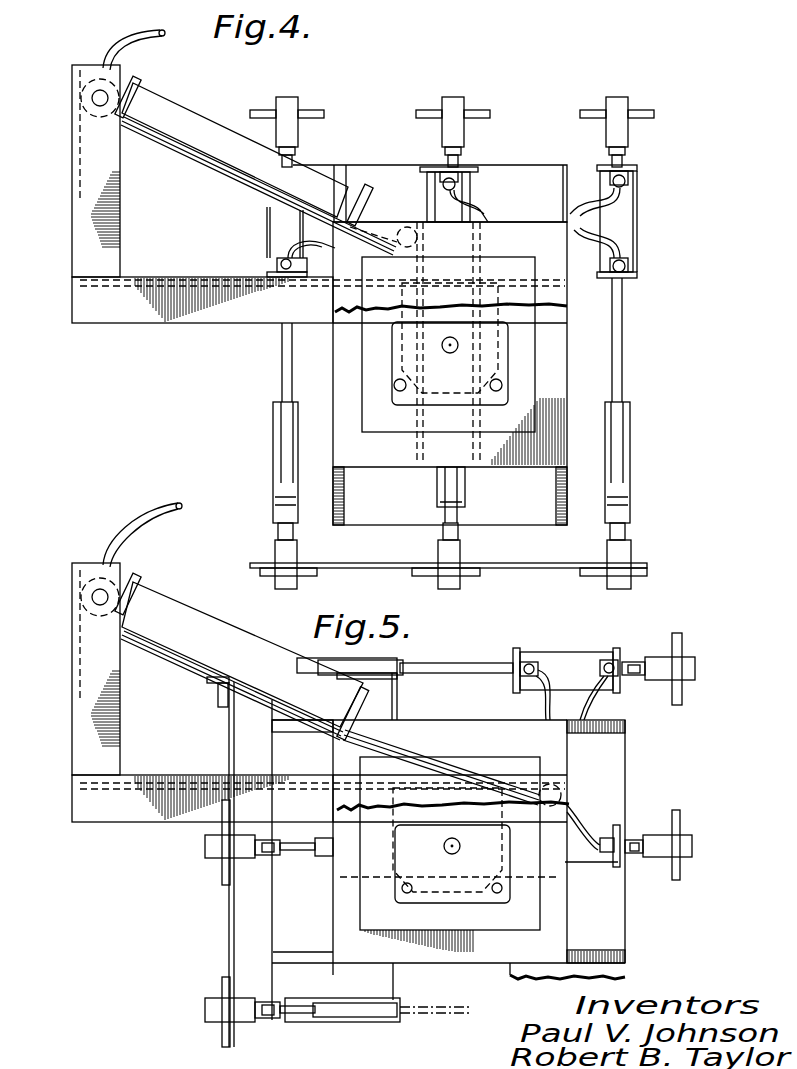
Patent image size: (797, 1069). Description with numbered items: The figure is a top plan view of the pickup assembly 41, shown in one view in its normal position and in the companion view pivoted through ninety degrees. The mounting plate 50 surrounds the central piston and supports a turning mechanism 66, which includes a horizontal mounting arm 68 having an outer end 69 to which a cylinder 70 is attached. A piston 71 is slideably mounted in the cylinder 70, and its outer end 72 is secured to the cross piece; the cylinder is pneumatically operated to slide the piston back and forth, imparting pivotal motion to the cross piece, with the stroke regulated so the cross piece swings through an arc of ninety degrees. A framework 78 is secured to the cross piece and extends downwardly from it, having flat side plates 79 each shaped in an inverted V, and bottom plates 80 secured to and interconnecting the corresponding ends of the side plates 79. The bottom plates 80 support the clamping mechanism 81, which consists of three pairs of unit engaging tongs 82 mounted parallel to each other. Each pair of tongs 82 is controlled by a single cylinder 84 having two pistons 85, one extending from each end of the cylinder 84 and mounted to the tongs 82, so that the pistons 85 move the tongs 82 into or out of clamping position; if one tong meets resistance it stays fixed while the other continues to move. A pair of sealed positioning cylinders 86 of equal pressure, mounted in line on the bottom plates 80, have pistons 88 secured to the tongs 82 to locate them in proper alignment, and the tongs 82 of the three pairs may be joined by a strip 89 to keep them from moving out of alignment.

In FIG. 4, the pickup assembly 41 is at (543, 76).
In FIG. 5, the pickup assembly 41 is at (190, 978).
In FIG. 4, the mounting plate 50 is at (553, 350).
In FIG. 5, the mounting plate 50 is at (550, 765).
In FIG. 4, the turning mechanism 66 is at (136, 326).
In FIG. 5, the turning mechanism 66 is at (95, 551).
In FIG. 4, the horizontal mounting arm 68 is at (193, 320).
In FIG. 5, the horizontal mounting arm 68 is at (140, 810).
In FIG. 4, the outer end 69 is at (82, 194).
In FIG. 5, the outer end 69 is at (85, 702).
In FIG. 4, the cylinder 70 is at (255, 165).
In FIG. 5, the cylinder 70 is at (185, 625).
In FIG. 4, the piston 71 is at (382, 212).
In FIG. 5, the piston 71 is at (445, 768).
In FIG. 4, the outer end 72 is at (400, 215).
In FIG. 5, the outer end 72 is at (532, 790).
In FIG. 5, the framework 78 is at (423, 720).
In FIG. 4, the side plates 79 is at (345, 487).
In FIG. 5, the side plates 79 is at (610, 721).
In FIG. 4, the bottom plates 80 is at (587, 223).
In FIG. 5, the bottom plates 80 is at (618, 914).
In FIG. 4, the clamping mechanism 81 is at (641, 164).
In FIG. 5, the clamping mechanism 81 is at (630, 650).
In FIG. 4, the tongs 82 is at (300, 108).
In FIG. 5, the tongs 82 is at (690, 657).
In FIG. 4, the cylinder 84 is at (628, 208).
In FIG. 5, the cylinder 84 is at (568, 663).
In FIG. 4, the pistons 85 is at (630, 155).
In FIG. 5, the pistons 85 is at (445, 666).
In FIG. 4, the positioning cylinders 86 is at (630, 495).
In FIG. 5, the positioning cylinders 86 is at (362, 1030).
In FIG. 4, the pistons 88 is at (630, 520).
In FIG. 5, the pistons 88 is at (283, 1024).
In FIG. 4, the strip 89 is at (538, 570).
In FIG. 5, the strip 89 is at (228, 944).